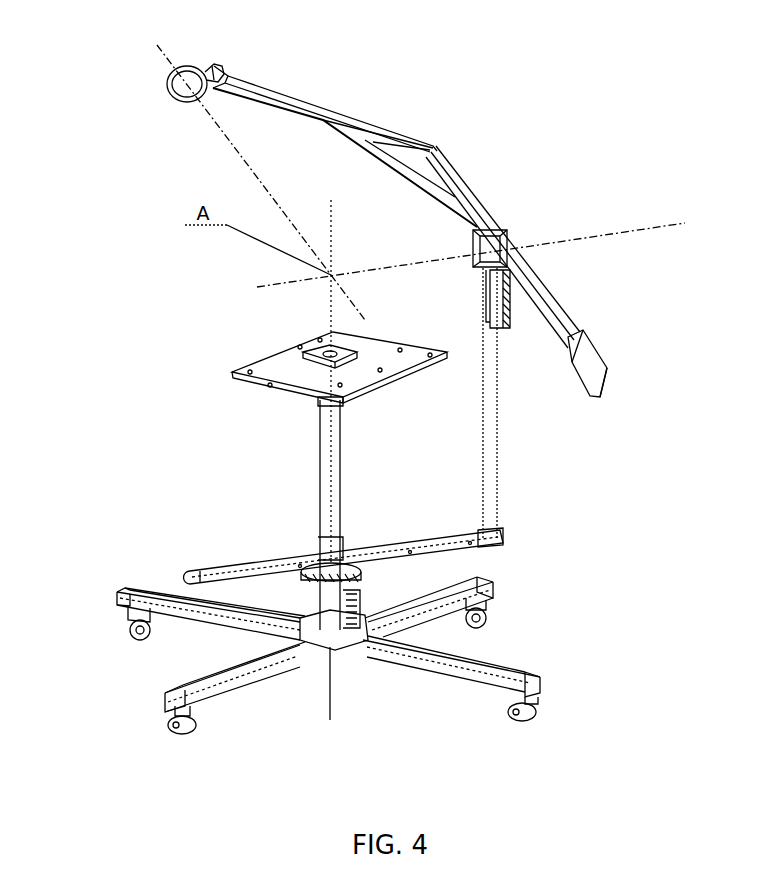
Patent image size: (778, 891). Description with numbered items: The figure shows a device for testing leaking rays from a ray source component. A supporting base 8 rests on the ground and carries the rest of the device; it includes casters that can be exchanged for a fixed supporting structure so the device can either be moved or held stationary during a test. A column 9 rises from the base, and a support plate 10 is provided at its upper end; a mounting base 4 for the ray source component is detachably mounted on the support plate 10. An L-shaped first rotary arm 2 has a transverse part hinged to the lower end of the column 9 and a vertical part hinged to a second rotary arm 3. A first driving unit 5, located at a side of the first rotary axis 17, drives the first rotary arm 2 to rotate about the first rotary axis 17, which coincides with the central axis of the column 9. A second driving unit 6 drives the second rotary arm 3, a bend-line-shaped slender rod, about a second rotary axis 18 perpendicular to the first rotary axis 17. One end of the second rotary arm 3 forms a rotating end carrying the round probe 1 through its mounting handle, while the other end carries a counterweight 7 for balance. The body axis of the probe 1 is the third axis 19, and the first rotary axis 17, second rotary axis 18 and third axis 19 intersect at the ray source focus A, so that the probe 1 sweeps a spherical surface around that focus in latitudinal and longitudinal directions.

The probe 1 is at (176, 78).
The third axis 19 is at (168, 55).
The second rotary arm 3 is at (443, 162).
The second driving unit 6 is at (507, 242).
The second rotary axis 18 is at (595, 237).
The counterweight 7 is at (607, 360).
The first rotary arm 2 is at (497, 457).
The mounting base 4 is at (308, 347).
The support plate 10 is at (305, 357).
The column 9 is at (323, 510).
The supporting base 8 is at (300, 632).
The first driving unit 5 is at (480, 617).
The first rotary axis 17 is at (330, 702).